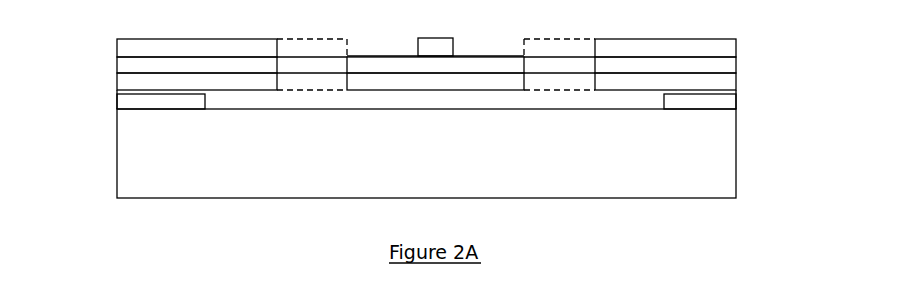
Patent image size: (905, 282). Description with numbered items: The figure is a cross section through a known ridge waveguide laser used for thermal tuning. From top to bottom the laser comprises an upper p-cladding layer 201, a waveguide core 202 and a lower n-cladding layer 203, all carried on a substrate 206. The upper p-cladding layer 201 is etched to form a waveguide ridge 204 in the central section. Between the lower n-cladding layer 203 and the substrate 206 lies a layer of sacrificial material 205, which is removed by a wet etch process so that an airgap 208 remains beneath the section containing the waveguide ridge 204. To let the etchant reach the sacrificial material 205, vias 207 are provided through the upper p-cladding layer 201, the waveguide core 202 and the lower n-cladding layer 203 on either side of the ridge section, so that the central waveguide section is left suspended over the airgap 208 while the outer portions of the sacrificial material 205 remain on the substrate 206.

The upper p-cladding layer 201 is at (203, 39).
The waveguide core 202 is at (117, 70).
The lower n-cladding layer 203 is at (117, 83).
The waveguide ridge 204 is at (435, 36).
The layer of sacrificial material 205 is at (117, 100).
The substrate 206 is at (117, 123).
The vias 207 is at (312, 65).
The airgap 208 is at (520, 103).